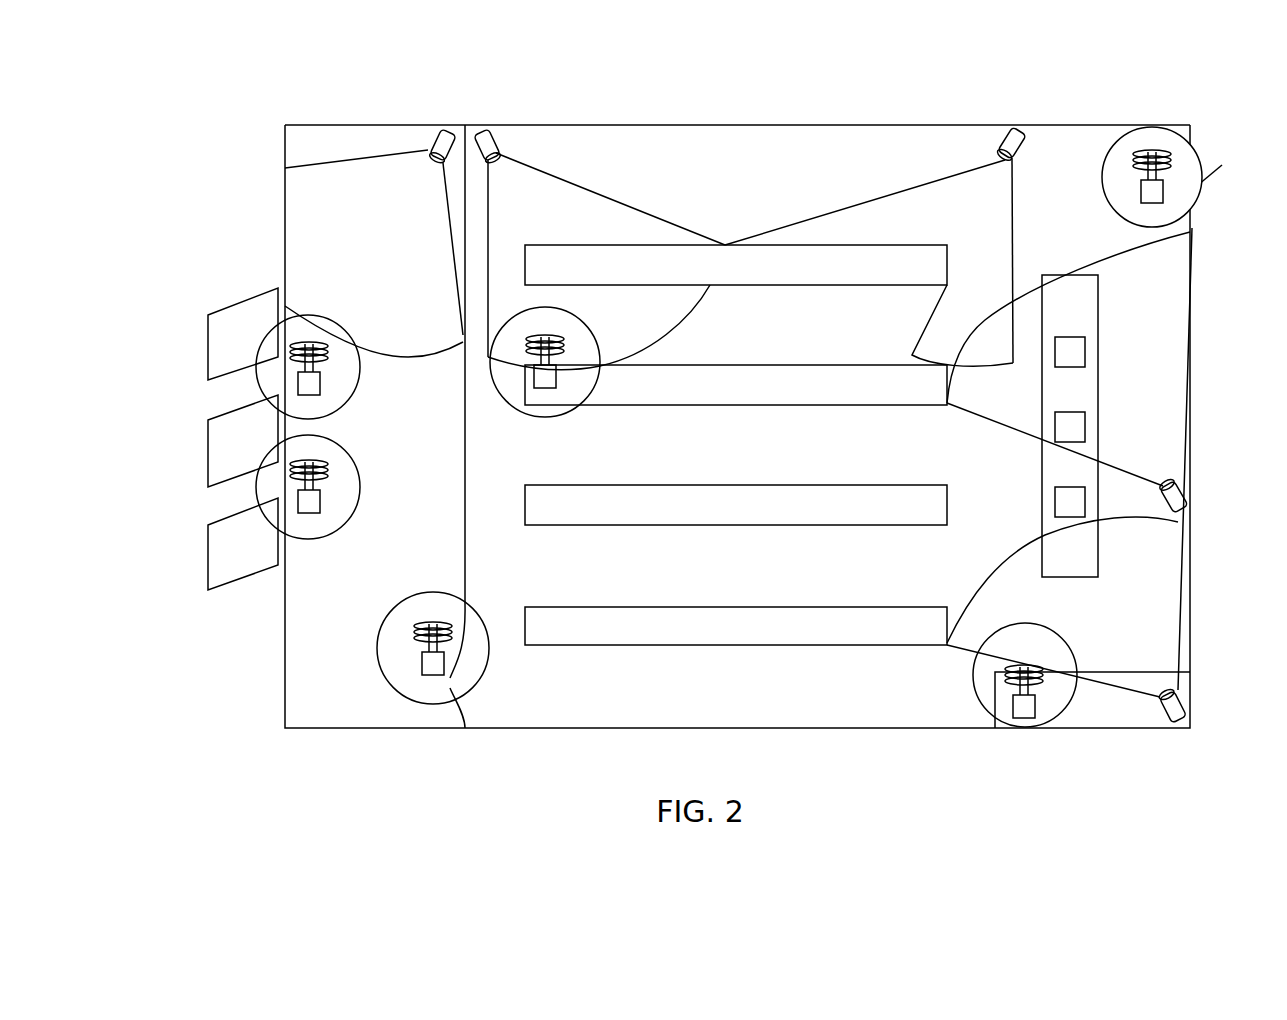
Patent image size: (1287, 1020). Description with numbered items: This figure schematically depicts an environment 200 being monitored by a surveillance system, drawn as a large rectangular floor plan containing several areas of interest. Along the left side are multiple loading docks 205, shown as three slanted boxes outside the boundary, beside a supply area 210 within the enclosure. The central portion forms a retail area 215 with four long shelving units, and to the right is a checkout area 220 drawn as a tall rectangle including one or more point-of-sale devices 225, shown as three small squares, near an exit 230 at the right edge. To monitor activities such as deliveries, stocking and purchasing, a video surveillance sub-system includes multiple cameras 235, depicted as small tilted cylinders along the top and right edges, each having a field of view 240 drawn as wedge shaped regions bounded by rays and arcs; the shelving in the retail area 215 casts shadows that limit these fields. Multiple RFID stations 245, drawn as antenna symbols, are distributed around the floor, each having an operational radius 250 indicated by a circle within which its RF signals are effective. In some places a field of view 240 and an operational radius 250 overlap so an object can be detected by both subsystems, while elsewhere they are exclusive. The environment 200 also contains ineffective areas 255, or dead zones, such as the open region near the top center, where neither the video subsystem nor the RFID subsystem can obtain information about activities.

The environment 200 is at (228, 108).
The loading docks 205 is at (207, 333).
The supply area 210 is at (313, 690).
The retail area 215 is at (640, 707).
The checkout area 220 is at (1070, 303).
The point-of-sale devices 225 is at (1085, 352).
The exit 230 is at (1215, 175).
The cameras 235 is at (437, 132).
The field of view 240 is at (316, 166).
The RFID stations 245 is at (298, 383).
The operational radius 250 is at (330, 313).
The ineffective areas 255 is at (712, 143).